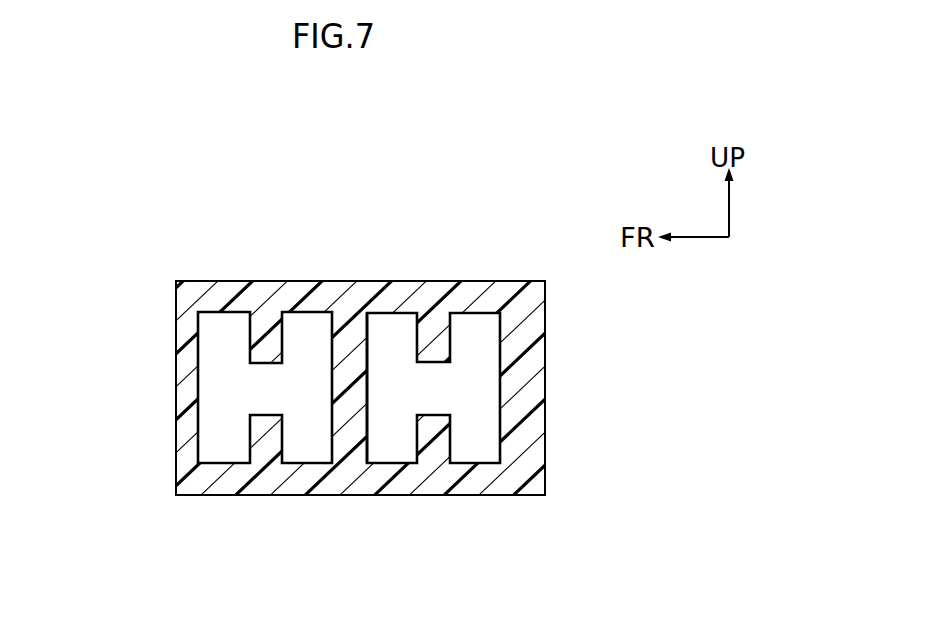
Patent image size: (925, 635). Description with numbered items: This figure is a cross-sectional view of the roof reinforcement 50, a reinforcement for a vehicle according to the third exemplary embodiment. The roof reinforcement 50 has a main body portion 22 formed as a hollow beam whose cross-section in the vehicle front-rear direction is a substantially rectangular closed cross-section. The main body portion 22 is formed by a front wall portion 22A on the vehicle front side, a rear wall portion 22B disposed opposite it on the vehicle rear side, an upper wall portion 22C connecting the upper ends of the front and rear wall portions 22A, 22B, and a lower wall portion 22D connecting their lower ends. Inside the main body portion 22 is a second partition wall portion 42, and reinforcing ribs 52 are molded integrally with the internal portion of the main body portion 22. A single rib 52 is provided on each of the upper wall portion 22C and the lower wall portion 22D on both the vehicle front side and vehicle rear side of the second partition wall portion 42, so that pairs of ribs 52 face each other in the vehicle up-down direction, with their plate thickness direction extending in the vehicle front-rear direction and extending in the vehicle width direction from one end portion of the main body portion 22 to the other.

The roof reinforcement 50 is at (336, 317).
The main body portion 22 is at (355, 390).
The front wall portion 22A is at (175, 460).
The rear wall portion 22B is at (545, 396).
The upper wall portion 22C is at (420, 282).
The lower wall portion 22D is at (465, 497).
The reinforcing rib 52 is at (283, 349).
The second partition wall portion 42 is at (368, 389).